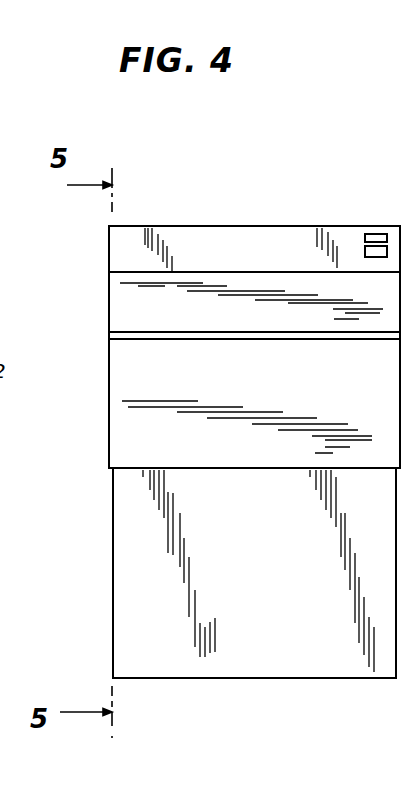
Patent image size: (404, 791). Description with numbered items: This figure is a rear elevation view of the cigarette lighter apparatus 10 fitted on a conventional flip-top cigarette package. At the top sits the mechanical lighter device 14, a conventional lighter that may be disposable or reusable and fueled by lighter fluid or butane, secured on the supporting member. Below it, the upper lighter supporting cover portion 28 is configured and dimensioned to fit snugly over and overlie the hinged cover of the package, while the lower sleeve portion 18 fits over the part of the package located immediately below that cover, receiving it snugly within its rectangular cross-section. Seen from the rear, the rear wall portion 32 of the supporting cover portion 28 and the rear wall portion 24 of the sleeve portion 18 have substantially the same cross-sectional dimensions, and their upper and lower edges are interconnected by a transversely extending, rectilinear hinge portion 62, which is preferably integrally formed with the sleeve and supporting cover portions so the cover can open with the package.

The cigarette lighter apparatus 10 is at (97, 410).
The mechanical lighter device 14 is at (240, 238).
The lower sleeve portion 18 is at (107, 450).
The rear wall portion 24 is at (190, 392).
The upper lighter supporting cover portion 28 is at (108, 312).
The rear wall portion 32 is at (212, 323).
The hinge portion 62 is at (272, 341).